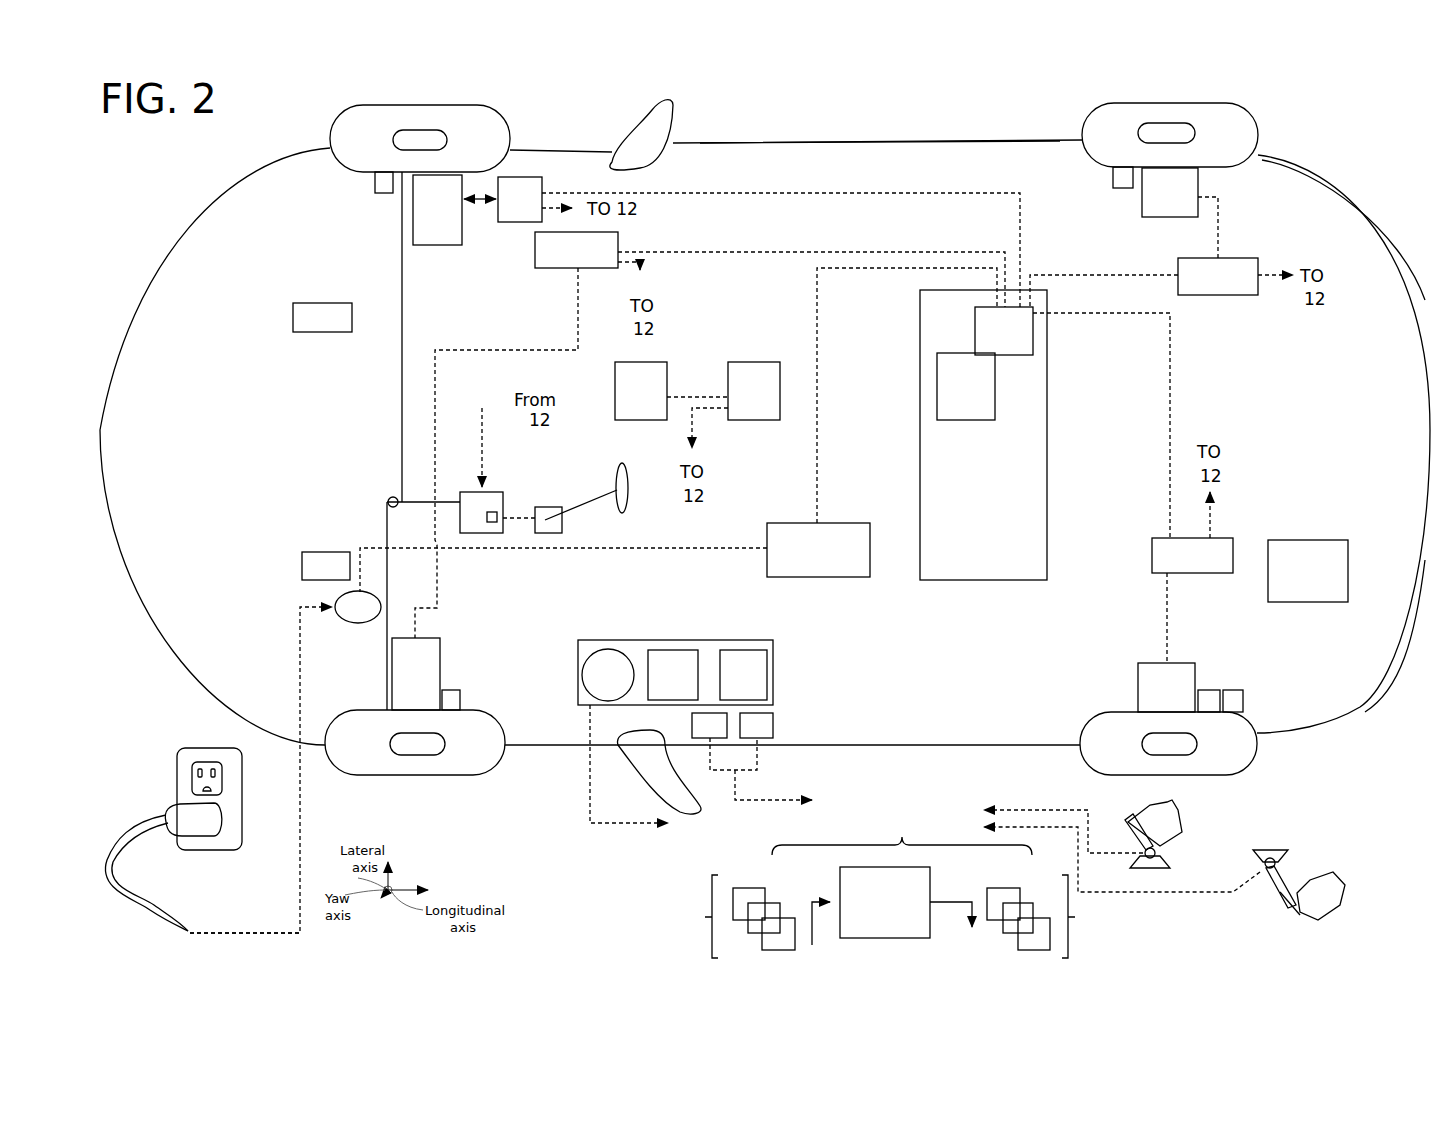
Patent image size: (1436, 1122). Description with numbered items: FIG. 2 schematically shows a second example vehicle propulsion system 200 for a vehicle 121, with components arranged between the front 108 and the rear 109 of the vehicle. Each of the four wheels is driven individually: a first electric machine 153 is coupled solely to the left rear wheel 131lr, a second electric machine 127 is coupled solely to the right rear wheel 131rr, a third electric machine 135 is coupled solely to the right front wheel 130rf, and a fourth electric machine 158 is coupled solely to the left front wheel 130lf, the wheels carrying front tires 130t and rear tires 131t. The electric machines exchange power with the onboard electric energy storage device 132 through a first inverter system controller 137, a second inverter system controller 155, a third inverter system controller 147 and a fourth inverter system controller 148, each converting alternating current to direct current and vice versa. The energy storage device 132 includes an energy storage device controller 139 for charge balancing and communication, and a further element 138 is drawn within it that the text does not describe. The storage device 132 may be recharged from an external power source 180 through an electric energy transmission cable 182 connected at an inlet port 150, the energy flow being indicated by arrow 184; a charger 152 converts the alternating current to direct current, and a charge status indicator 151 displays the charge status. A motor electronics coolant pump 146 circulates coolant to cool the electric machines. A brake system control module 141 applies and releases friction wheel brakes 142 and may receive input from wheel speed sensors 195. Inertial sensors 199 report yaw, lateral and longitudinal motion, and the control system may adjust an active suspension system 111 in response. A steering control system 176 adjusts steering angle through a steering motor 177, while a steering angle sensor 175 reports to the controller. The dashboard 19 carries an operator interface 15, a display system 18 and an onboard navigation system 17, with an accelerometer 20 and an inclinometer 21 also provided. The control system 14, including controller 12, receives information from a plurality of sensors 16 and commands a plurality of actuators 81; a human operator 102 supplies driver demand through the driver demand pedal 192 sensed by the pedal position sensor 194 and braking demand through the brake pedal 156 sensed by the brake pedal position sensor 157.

The front 108 is at (146, 210).
The rear 109 is at (1360, 160).
The vehicle 121 is at (1372, 735).
The vehicle propulsion system 200 is at (908, 119).
The tire 130t is at (432, 105).
The right front wheel 130rf is at (447, 140).
The left front wheel 130lf is at (445, 745).
The tire 131t is at (1205, 103).
The right rear wheel 131rr is at (1195, 133).
The left rear wheel 131lr is at (1197, 745).
The friction wheel brakes 142 is at (380, 193).
The third electric machine 135 is at (437, 210).
The third inverter system controller 147 is at (518, 199).
The fourth inverter system controller 148 is at (587, 251).
The motor electronics coolant pump 146 is at (322, 317).
The charge status indicator 151 is at (326, 566).
The inlet port 150 is at (365, 623).
The fourth electric machine 158 is at (416, 674).
The steering control system 176 is at (490, 492).
The steering motor 177 is at (497, 512).
The steering angle sensor 175 is at (552, 507).
The active suspension system 111 is at (641, 391).
The inertial sensors 199 is at (723, 405).
The charger 152 is at (818, 550).
The electric energy storage device 132 is at (983, 435).
The battery controller 138 is at (1004, 331).
The electric energy storage device controller 139 is at (966, 386).
The first inverter system controller 137 is at (1192, 532).
The brake system control module 141 is at (1308, 571).
The second inverter system controller 155 is at (1235, 276).
The second electric machine 127 is at (1170, 192).
The first electric machine 153 is at (1166, 687).
The wheel speed sensors 195 is at (1210, 690).
The dashboard 19 is at (706, 640).
The operator interface 15 is at (608, 675).
The display system 18 is at (673, 675).
The onboard navigation system 17 is at (743, 675).
The inclinometer 21 is at (709, 725).
The accelerometer 20 is at (756, 725).
The control system 14 is at (902, 821).
The sensors 16 is at (713, 916).
The controller 12 is at (885, 902).
The actuators 81 is at (1076, 916).
The power source 180 is at (177, 778).
The electric energy transmission cable 182 is at (108, 845).
The arrow 184 is at (240, 932).
The driver demand pedal 192 is at (1133, 837).
The driver demand pedal position sensor 194 is at (1158, 853).
The brake pedal position sensor 157 is at (1262, 864).
The brake pedal 156 is at (1293, 912).
The human operator 102 is at (1165, 826).